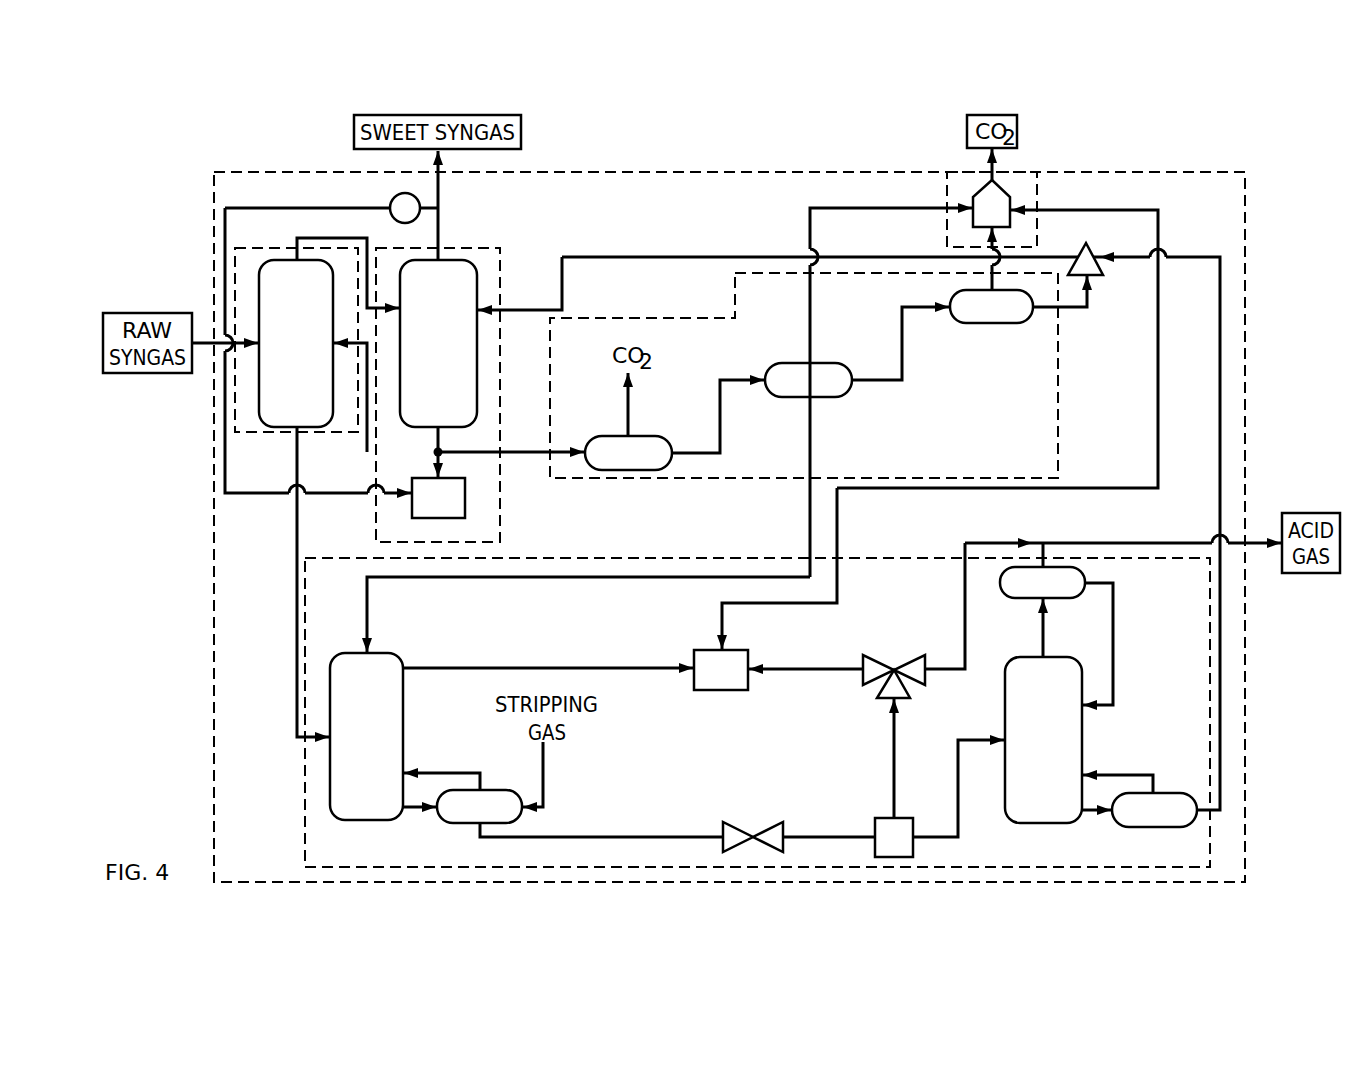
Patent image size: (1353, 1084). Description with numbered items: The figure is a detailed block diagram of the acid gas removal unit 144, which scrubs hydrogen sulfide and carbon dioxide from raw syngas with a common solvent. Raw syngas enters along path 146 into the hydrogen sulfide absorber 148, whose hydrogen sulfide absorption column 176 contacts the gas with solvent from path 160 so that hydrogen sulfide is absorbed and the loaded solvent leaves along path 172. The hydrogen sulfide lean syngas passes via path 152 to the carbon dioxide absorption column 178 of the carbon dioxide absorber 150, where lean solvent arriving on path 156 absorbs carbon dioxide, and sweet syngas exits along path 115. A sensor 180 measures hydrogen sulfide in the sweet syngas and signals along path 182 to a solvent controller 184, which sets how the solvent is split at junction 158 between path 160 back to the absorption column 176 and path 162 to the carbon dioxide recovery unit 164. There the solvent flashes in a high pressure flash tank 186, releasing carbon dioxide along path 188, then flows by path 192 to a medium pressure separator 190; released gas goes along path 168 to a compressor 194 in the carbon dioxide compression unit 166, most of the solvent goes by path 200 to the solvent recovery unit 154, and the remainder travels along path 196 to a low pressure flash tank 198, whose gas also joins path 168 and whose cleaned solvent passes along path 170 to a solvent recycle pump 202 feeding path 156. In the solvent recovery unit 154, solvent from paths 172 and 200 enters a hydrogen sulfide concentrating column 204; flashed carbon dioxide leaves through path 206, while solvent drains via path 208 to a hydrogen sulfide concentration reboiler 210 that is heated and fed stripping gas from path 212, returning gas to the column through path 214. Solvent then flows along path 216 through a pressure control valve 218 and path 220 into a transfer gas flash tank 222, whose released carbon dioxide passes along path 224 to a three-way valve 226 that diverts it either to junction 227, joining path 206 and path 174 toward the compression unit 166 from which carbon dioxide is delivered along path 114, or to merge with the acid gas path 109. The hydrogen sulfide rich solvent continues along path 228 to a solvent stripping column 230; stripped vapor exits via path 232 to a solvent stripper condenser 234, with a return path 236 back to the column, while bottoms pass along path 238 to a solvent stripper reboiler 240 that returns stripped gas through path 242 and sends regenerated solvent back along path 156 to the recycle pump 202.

The path 109 is at (1124, 542).
The path 114 is at (988, 165).
The path 115 is at (441, 195).
The AGR unit 144 is at (1245, 197).
The path 146 is at (207, 330).
The H2S absorber 148 is at (253, 433).
The CO2 absorber 150 is at (375, 520).
The path 152 is at (330, 236).
The solvent recovery unit 154 is at (636, 555).
The path 156 is at (640, 257).
The junction 158 is at (442, 455).
The path 160 is at (367, 443).
The path 162 is at (520, 452).
The CO2 recovery unit 164 is at (673, 318).
The CO2 compression unit 166 is at (1037, 200).
The path 168 is at (810, 232).
The path 170 is at (1080, 308).
The path 172 is at (297, 627).
The path 174 is at (839, 521).
The H2S absorption column 176 is at (313, 339).
The CO2 absorption column 178 is at (455, 361).
The sensor 180 is at (392, 200).
The path 182 is at (233, 207).
The solvent controller 184 is at (455, 510).
The high pressure flash tank 186 is at (645, 466).
The path 188 is at (630, 410).
The medium pressure separator 190 is at (825, 393).
The path 192 is at (738, 380).
The compressor 194 is at (973, 193).
The path 196 is at (903, 343).
The low pressure flash tank 198 is at (1008, 320).
The path 200 is at (808, 522).
The solvent recycle pump 202 is at (1097, 245).
The H2S concentrating column 204 is at (383, 751).
The path 206 is at (634, 669).
The path 208 is at (412, 810).
The H2S concentration reboiler 210 is at (497, 820).
The path 212 is at (547, 772).
The path 214 is at (448, 772).
The path 216 is at (604, 835).
The pressure control valve 218 is at (740, 823).
The path 220 is at (828, 837).
The transfer gas flash tank 222 is at (875, 819).
The heated solvent stream 224 is at (893, 747).
The 3-way valve 226 is at (893, 655).
The junction 227 is at (738, 682).
The path 228 is at (958, 840).
The solvent stripping column 230 is at (1060, 751).
The path 232 is at (1041, 634).
The solvent stripper condenser 234 is at (1060, 596).
The reflux stream 236 is at (1115, 643).
The path 238 is at (1088, 810).
The solvent stripper reboiler 240 is at (1172, 823).
The path 242 is at (1125, 773).